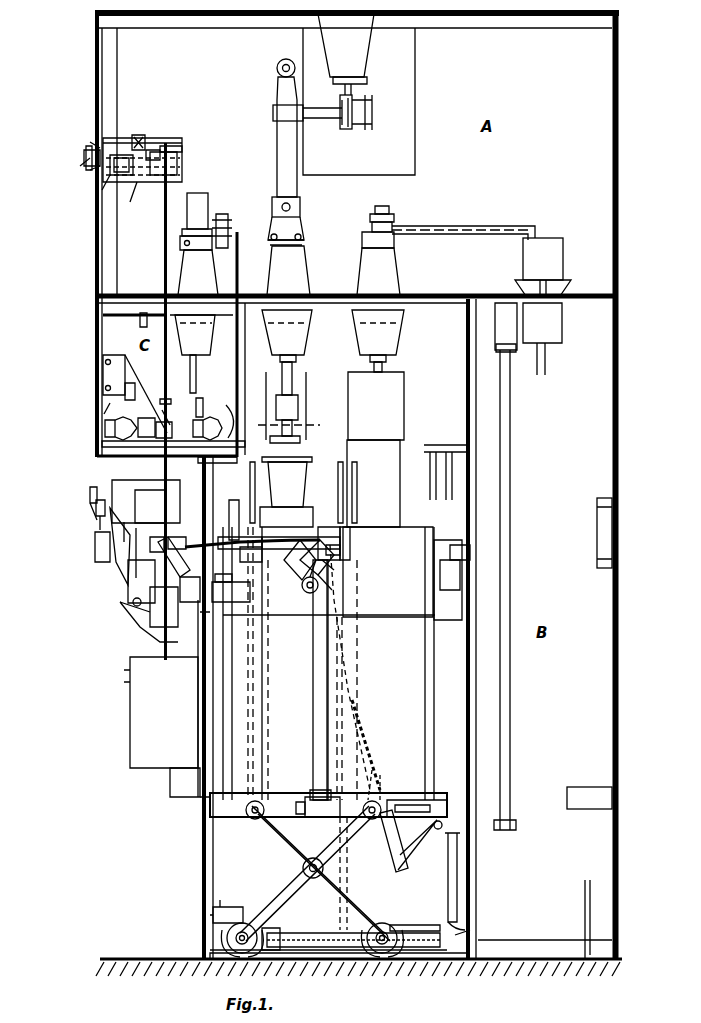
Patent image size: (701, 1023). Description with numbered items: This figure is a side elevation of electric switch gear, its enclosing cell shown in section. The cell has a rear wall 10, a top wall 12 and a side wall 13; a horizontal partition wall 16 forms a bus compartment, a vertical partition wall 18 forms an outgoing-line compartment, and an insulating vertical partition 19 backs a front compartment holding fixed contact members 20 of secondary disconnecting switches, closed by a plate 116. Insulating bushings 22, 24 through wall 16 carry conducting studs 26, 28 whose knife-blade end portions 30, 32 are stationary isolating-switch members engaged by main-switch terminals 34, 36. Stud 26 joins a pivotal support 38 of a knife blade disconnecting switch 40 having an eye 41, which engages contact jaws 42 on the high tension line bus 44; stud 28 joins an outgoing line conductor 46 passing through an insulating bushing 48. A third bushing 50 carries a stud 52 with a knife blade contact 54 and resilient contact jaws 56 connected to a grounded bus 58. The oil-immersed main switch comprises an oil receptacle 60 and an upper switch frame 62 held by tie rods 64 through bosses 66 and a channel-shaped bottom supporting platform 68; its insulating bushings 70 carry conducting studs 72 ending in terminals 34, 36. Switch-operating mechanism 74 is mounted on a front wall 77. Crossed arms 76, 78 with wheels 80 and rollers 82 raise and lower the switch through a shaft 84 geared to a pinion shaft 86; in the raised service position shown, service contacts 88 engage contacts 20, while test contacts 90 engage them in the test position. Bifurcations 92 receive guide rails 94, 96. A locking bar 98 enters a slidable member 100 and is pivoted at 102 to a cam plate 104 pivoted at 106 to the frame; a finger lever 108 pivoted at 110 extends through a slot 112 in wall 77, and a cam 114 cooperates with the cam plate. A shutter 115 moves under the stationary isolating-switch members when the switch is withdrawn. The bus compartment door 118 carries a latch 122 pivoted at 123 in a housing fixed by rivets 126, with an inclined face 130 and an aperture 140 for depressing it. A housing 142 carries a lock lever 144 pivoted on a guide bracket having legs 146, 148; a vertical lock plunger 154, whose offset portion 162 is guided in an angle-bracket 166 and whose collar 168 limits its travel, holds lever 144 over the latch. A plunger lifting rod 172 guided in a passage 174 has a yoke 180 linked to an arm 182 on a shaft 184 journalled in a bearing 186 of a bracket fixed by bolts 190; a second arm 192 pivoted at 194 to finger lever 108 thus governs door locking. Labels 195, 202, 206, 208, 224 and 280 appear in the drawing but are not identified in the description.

The rear wall 10 is at (617, 672).
The top wall 12 is at (530, 16).
The side wall 13 is at (128, 50).
The horizontal partition wall 16 is at (436, 297).
The vertical partition wall 18 is at (478, 688).
The vertical partition 19 is at (236, 378).
The fixed contact members 20 is at (138, 408).
The high tension insulating bushing 22 is at (302, 282).
The high tension insulating bushing 24 is at (388, 278).
The vertical conducting stud 26 is at (268, 246).
The vertical conducting stud 28 is at (390, 198).
The lower extended end portion 30 is at (292, 362).
The lower extended end portion 32 is at (388, 352).
The terminal 34 is at (292, 380).
The terminal 36 is at (384, 366).
The pivotal support 38 is at (296, 226).
The knife blade disconnecting switch 40 is at (277, 175).
The eye 41 is at (276, 65).
The fixed contact jaws 42 is at (273, 108).
The high tension line bus 44 is at (366, 112).
The outgoing line conductor 46 is at (482, 230).
The insulating bushing 48 is at (558, 266).
The third high tension insulating bushing 50 is at (214, 282).
The vertical conducting stud 52 is at (180, 246).
The knife blade contact 54 is at (200, 380).
The resilient contact jaws 56 is at (196, 198).
The grounded bus 58 is at (230, 232).
The oil receptacle 60 is at (329, 663).
The upper switch frame 62 is at (345, 594).
The tie rods 64 is at (222, 792).
The laterally-extended bosses 66 is at (270, 590).
The channel-shaped bottom supporting platform 68 is at (222, 817).
The insulating bushings 70 is at (287, 482).
The conducting studs 72 is at (304, 438).
The switch-operating mechanism 74 is at (105, 562).
The crossed arms 76 is at (306, 852).
The front wall 77 is at (195, 690).
The crossed arms 78 is at (280, 895).
The switch supporting wheels 80 is at (226, 933).
The rollers 82 is at (378, 797).
The shaft 84 is at (332, 952).
The pinion shaft 86 is at (220, 900).
The service contacts 88 is at (110, 440).
The test contacts 90 is at (213, 418).
The bifurcations 92 is at (336, 548).
The vertical guide rail 94 is at (338, 500).
The vertical guide rail 96 is at (238, 508).
The locking bar 98 is at (313, 738).
The member 100 is at (299, 797).
The pivotal connection 102 is at (336, 564).
The cam plate 104 is at (286, 530).
The pivot 106 is at (368, 547).
The horizontal finger lever 108 is at (230, 577).
The pivot 110 is at (333, 534).
The slot 112 is at (226, 511).
The cam 114 is at (338, 580).
The shutter 115 is at (455, 478).
The plate 116 is at (97, 344).
The door 118 is at (96, 98).
The latch 122 is at (84, 166).
The pivot 123 is at (71, 150).
The rivets 126 is at (90, 142).
The lower inclined face 130 is at (126, 142).
The aperture 140 is at (84, 157).
The housing 142 is at (183, 156).
The horizontal lock lever 144 is at (170, 138).
The leg 146 is at (142, 136).
The leg 148 is at (138, 199).
The vertical lock plunger 154 is at (164, 229).
The offset portion 162 is at (179, 410).
The angle-bracket 166 is at (176, 425).
The collar 168 is at (168, 398).
The plunger lifting rod 172 is at (165, 488).
The guide passage 174 is at (173, 450).
The yoke 180 is at (150, 536).
The arm 182 is at (168, 558).
The shaft 184 is at (149, 614).
The bearing 186 is at (188, 588).
The bolts 190 is at (241, 563).
The second upstanding arm 192 is at (181, 534).
The pivot 194 is at (240, 535).
The pin 195 is at (159, 140).
The arm 202 is at (301, 560).
The spring 206 is at (102, 190).
The shaft 208 is at (183, 166).
The clip 224 is at (180, 146).
The bar 280 is at (297, 535).